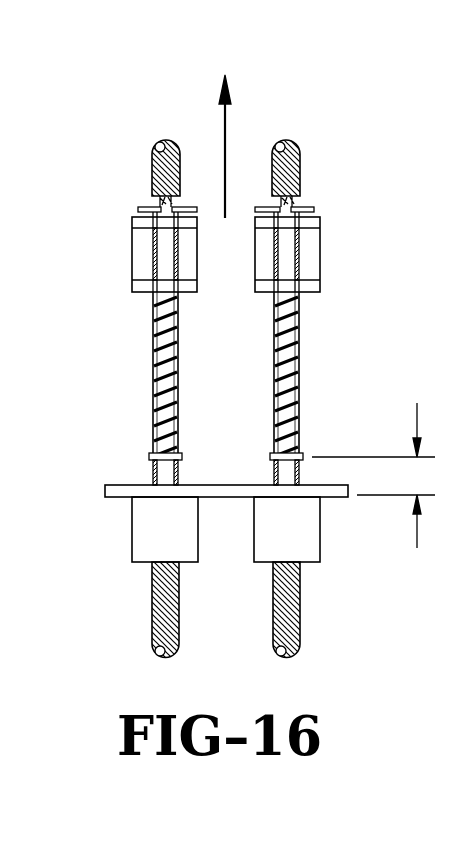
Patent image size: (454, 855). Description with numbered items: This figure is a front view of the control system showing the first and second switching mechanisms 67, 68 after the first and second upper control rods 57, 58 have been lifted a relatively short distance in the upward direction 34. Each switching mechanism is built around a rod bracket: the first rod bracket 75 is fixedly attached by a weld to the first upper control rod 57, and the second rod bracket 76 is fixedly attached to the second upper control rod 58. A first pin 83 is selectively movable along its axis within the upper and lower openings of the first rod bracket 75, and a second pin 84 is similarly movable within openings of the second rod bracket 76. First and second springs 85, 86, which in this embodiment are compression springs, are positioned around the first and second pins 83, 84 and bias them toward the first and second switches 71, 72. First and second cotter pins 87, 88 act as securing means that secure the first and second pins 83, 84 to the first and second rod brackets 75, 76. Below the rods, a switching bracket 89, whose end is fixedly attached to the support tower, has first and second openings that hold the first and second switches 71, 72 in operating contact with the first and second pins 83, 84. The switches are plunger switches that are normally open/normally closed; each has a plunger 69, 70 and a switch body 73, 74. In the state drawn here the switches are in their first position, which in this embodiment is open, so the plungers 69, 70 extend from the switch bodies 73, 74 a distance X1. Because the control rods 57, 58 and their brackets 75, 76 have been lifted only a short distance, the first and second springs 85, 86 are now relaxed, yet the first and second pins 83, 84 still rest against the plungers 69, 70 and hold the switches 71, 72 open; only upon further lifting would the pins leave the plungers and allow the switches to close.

The upward direction 34 is at (227, 133).
The first upper control rod 57 is at (292, 155).
The second upper control rod 58 is at (161, 155).
The first switching mechanism 67 is at (338, 393).
The second switching mechanism 68 is at (114, 393).
The plunger 69 is at (290, 467).
The plunger 70 is at (153, 456).
The first switch 71 is at (322, 536).
The second switch 72 is at (130, 536).
The switch body 73 is at (301, 540).
The switch body 74 is at (179, 540).
The first rod bracket 75 is at (310, 283).
The second rod bracket 76 is at (144, 282).
The first pin 83 is at (293, 187).
The second pin 84 is at (160, 187).
The first spring 85 is at (297, 358).
The second spring 86 is at (155, 385).
The first cotter pin 87 is at (302, 208).
The second cotter pin 88 is at (150, 208).
The switching bracket 89 is at (143, 489).
The distance X1 is at (373, 475).